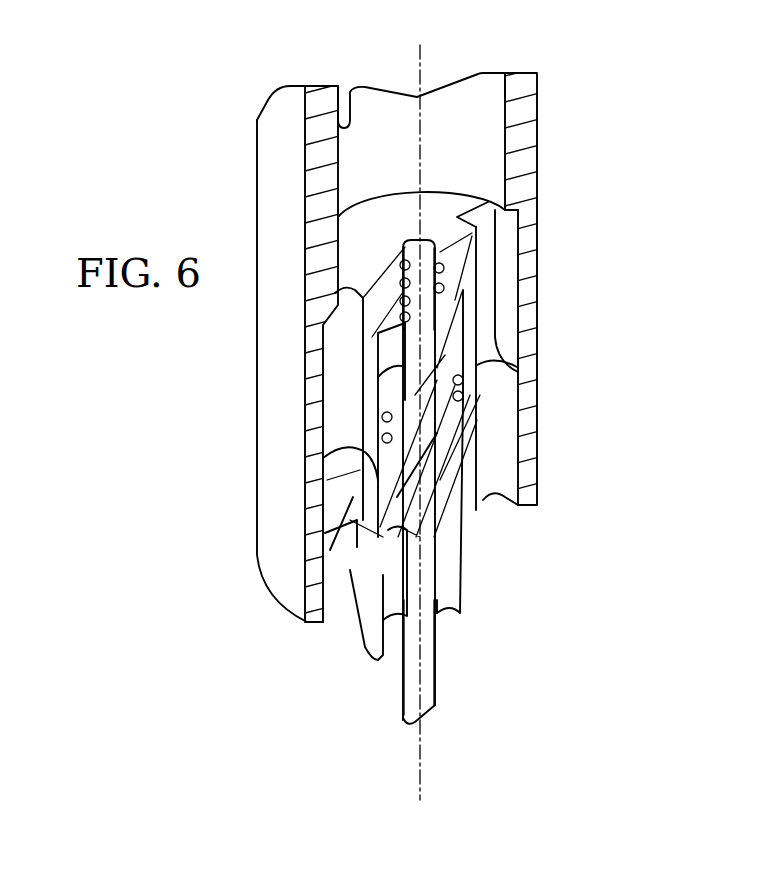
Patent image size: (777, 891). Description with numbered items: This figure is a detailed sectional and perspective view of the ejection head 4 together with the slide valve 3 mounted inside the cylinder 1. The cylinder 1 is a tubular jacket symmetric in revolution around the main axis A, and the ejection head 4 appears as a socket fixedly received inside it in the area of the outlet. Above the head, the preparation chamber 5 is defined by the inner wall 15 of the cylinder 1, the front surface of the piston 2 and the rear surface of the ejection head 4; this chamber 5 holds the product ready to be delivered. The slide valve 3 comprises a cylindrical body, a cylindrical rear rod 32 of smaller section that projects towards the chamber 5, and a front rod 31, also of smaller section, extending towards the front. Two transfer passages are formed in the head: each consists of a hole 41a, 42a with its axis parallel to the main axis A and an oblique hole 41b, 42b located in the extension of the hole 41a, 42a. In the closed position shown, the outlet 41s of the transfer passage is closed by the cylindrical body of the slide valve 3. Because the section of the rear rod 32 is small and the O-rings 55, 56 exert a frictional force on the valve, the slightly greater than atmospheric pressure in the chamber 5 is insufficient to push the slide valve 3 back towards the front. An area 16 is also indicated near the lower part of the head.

The cylinder 1 is at (305, 127).
The piston 2 is at (358, 82).
The inner wall 15 is at (497, 104).
The ejection head 4 is at (437, 217).
The preparation chamber 5 is at (384, 164).
The cylindrical rear rod 32 is at (417, 243).
The hole 41a is at (510, 263).
The O-ring 55 is at (444, 288).
The hole 42a is at (342, 365).
The O-ring 56 is at (463, 390).
The oblique hole 41b is at (488, 397).
The oblique hole 42b is at (347, 478).
The outlet of the transfer passage 41s is at (523, 507).
The slide valve 3 is at (447, 503).
The outlet 16 is at (472, 572).
The front rod 31 is at (428, 697).
The axis A is at (420, 768).